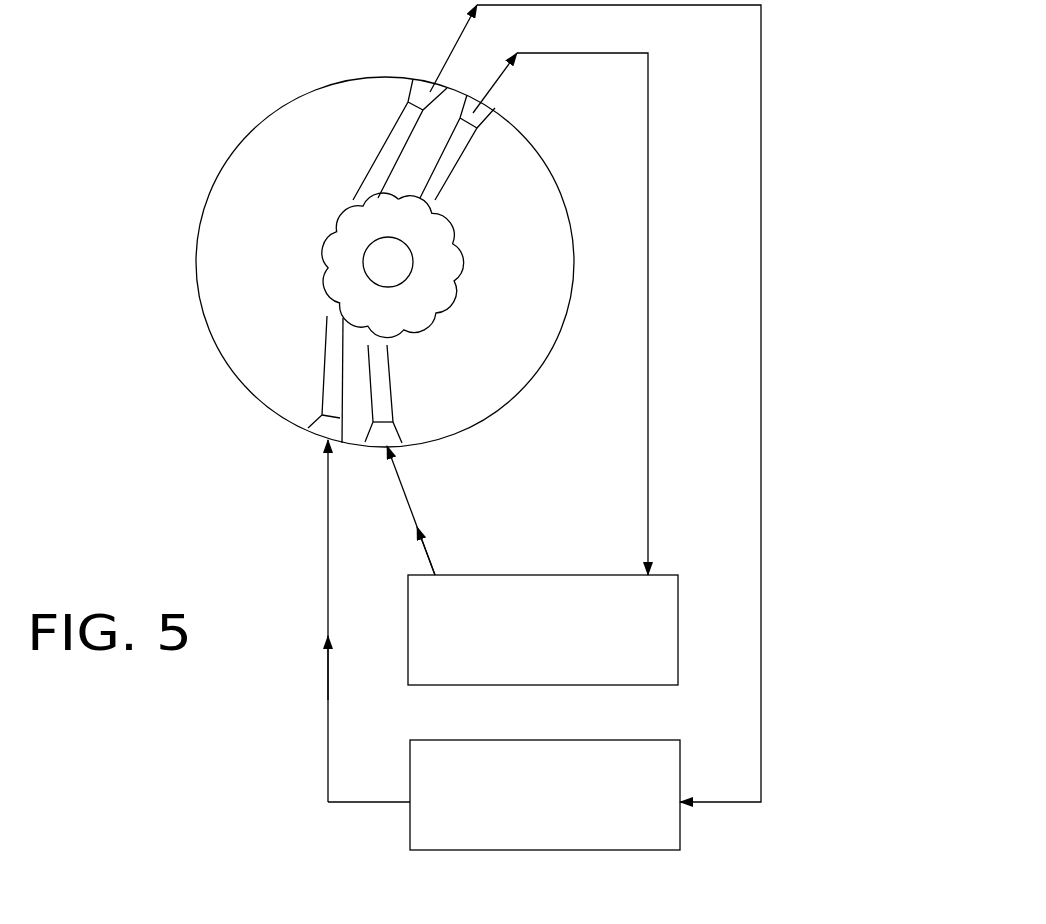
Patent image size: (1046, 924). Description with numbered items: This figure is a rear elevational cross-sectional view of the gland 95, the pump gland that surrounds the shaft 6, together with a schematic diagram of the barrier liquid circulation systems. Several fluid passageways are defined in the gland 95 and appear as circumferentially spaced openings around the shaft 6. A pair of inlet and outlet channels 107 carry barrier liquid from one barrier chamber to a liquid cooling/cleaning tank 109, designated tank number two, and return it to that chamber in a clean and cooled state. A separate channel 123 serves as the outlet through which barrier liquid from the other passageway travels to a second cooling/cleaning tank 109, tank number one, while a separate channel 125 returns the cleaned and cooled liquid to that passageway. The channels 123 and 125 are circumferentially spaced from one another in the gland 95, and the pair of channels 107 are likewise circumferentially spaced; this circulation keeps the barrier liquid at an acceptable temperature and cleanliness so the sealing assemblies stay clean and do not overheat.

The shaft 6 is at (387, 261).
The gland 95 is at (503, 133).
The fluid flow channel 107 is at (395, 143).
The liquid cooling/cleaning tank 109 is at (507, 585).
The fluid channel 123 is at (438, 173).
The fluid channel 125 is at (410, 482).